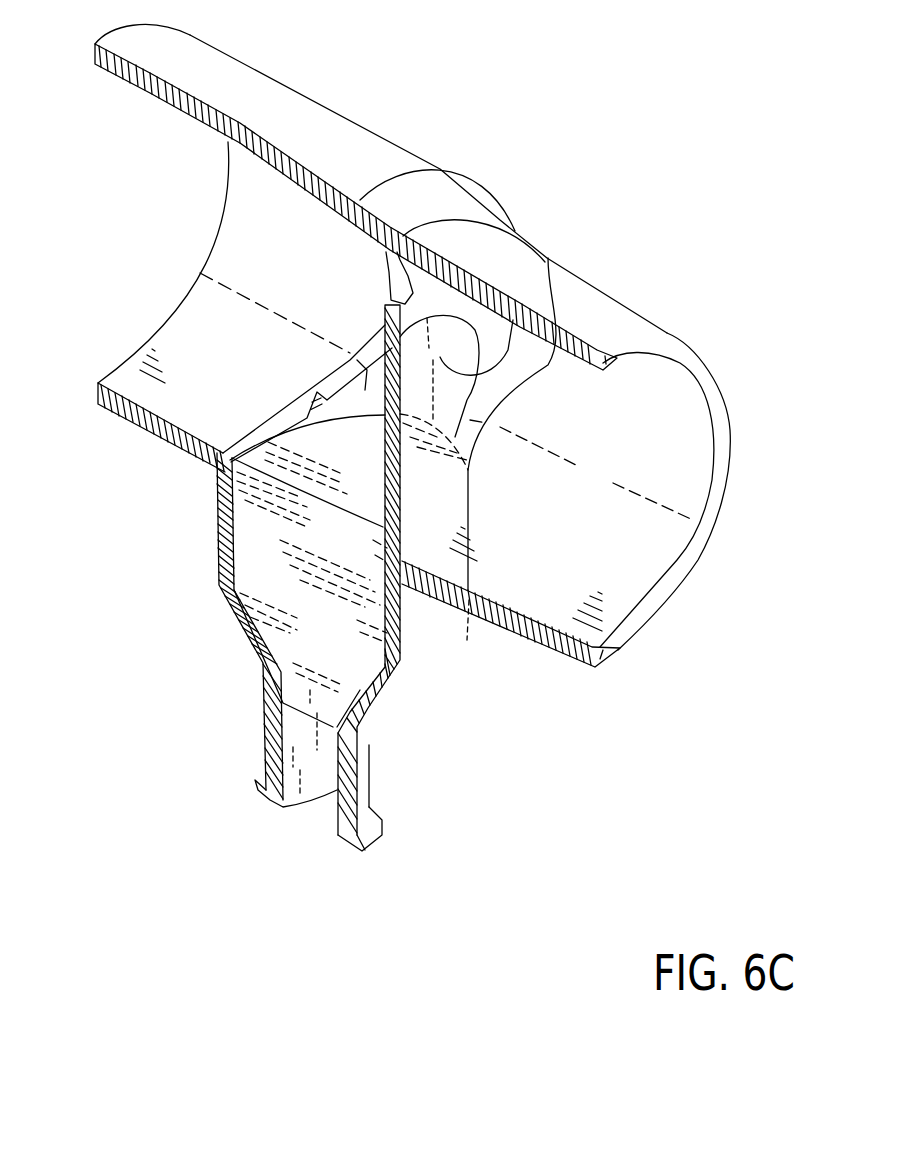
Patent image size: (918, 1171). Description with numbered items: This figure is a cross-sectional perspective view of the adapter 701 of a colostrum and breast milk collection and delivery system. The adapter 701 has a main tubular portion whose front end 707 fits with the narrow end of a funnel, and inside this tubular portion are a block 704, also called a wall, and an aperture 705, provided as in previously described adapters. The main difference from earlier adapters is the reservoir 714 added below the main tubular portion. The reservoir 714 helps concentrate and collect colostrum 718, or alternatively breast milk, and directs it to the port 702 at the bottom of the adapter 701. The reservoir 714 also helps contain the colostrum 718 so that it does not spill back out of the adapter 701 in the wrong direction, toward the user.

The adapter 701 is at (515, 231).
The port 702 is at (372, 763).
The block 704 is at (548, 258).
The aperture 705 is at (395, 283).
The front end 707 is at (117, 365).
The reservoir 714 is at (222, 517).
The colostrum 718 is at (413, 612).